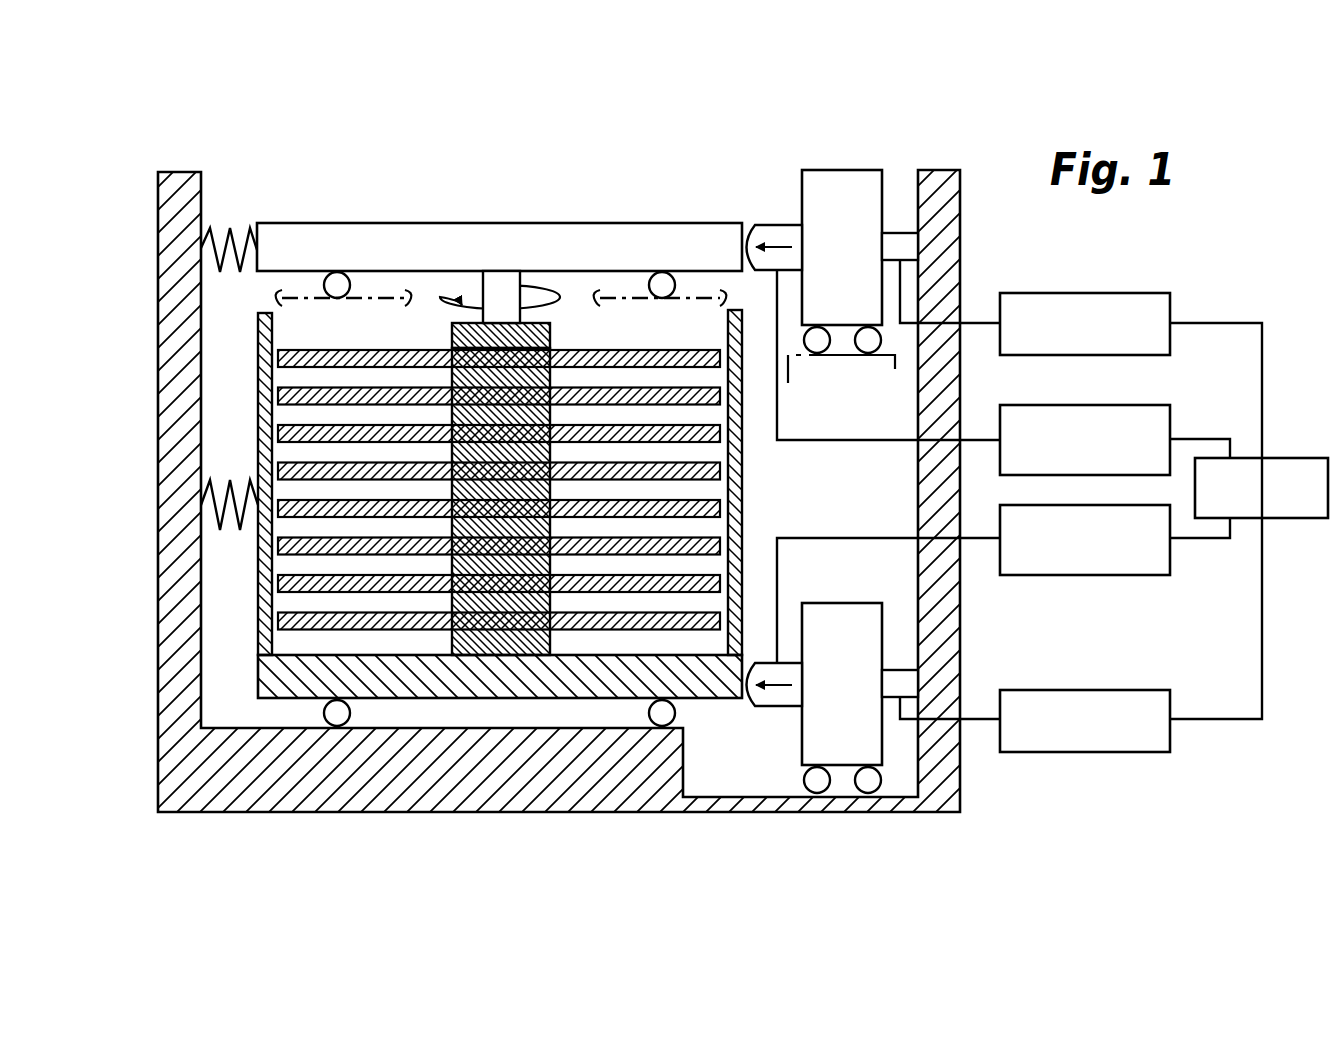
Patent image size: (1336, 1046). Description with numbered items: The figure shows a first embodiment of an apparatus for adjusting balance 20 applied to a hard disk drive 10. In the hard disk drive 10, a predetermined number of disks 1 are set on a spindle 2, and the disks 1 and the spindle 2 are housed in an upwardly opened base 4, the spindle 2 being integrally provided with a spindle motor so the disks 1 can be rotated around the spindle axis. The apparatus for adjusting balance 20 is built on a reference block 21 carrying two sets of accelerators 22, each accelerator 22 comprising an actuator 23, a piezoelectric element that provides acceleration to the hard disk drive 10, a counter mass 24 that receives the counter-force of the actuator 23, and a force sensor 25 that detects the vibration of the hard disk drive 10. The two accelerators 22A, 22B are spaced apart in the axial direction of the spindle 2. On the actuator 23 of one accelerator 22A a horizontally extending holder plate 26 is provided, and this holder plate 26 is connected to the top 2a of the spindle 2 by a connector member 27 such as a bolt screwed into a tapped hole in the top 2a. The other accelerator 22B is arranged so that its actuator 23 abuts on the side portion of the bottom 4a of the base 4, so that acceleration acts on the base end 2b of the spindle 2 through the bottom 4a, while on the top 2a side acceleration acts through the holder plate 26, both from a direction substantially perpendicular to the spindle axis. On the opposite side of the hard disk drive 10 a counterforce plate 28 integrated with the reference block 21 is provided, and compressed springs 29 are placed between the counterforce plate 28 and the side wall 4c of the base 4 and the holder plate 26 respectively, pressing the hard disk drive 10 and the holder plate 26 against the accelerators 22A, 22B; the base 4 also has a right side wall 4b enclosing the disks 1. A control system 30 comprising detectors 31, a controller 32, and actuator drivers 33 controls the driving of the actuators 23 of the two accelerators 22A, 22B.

The disk 1 is at (343, 428).
The spindle 2 is at (541, 453).
The top of the spindle 2a is at (550, 340).
The base end of the spindle 2b is at (526, 640).
The base 4 is at (514, 584).
The bottom of the base 4a is at (488, 690).
The casing right side wall 4b is at (742, 500).
The side wall of the base 4c is at (258, 385).
The hard disk drive 10 is at (698, 710).
The apparatus for adjusting balance 20 is at (797, 493).
The reference block 21 is at (936, 492).
The accelerator 22 is at (830, 493).
The accelerator 22A is at (830, 460).
The accelerator 22B is at (903, 858).
The actuator 23 is at (790, 236).
The counter mass 24 is at (838, 186).
The force sensor 25 is at (892, 489).
The holder plate 26 is at (648, 238).
The connector member 27 is at (506, 290).
The counterforce plate 28 is at (178, 176).
The spring 29 is at (246, 228).
The control system 30 is at (1164, 508).
The detector 31 is at (1140, 293).
The controller 32 is at (1300, 458).
The actuator driver 33 is at (1140, 405).